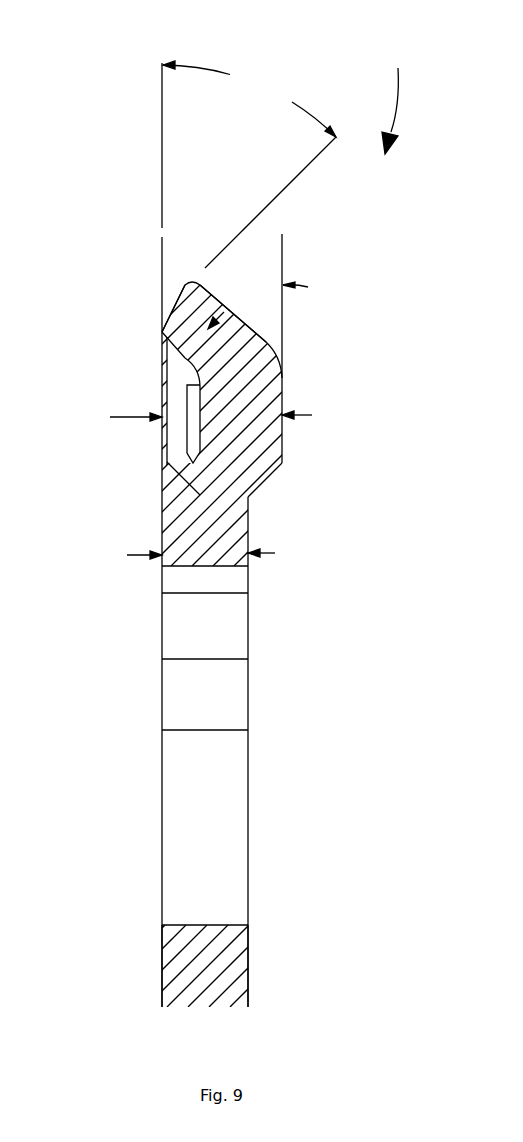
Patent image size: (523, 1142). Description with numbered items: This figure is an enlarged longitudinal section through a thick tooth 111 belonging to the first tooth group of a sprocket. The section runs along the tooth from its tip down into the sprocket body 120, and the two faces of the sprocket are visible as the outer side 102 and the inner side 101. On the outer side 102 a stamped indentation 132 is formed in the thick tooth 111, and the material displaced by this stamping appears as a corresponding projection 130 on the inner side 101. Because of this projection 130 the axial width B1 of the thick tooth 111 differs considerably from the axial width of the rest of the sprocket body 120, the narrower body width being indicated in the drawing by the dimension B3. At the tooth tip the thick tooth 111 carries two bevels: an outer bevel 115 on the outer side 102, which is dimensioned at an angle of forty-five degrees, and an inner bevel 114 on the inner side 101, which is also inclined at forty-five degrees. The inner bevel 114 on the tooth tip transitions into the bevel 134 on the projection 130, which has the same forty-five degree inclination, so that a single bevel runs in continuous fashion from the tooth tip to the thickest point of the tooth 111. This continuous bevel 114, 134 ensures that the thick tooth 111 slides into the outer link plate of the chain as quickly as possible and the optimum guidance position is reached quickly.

The inner side 101 is at (248, 950).
The outer side 102 is at (162, 950).
The thick tooth 111 is at (382, 86).
The inner bevel 114 is at (206, 283).
The outer bevel 115 is at (176, 293).
The sprocket body 120 is at (230, 968).
The projection 130 is at (258, 455).
The stamped indentation 132 is at (187, 434).
The bevel 134 is at (255, 338).
The axial width B1 is at (235, 417).
The shank width B3 is at (171, 560).